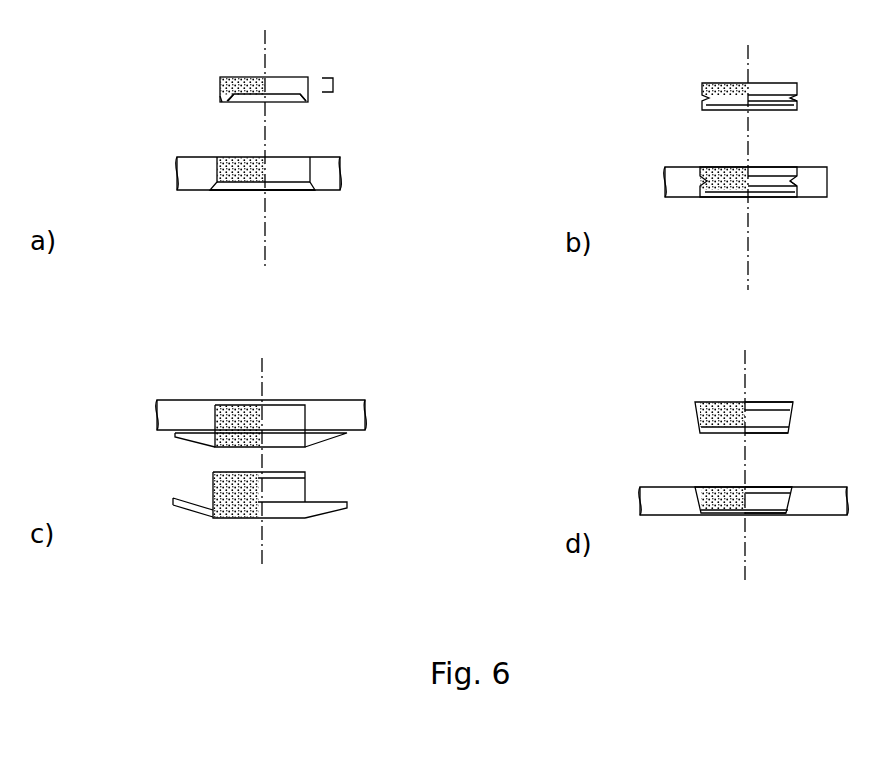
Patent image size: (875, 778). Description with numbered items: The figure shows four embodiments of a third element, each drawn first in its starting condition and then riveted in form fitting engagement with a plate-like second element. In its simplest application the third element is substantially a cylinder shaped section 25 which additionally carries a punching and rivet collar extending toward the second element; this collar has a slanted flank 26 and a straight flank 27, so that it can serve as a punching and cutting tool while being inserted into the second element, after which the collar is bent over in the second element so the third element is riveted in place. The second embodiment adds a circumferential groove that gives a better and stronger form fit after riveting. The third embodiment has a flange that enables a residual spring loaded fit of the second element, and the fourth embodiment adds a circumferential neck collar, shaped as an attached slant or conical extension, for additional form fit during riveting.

The cylinder shaped section 25 is at (336, 85).
The slanted flank 26 is at (233, 102).
The straight flank 27 is at (218, 106).